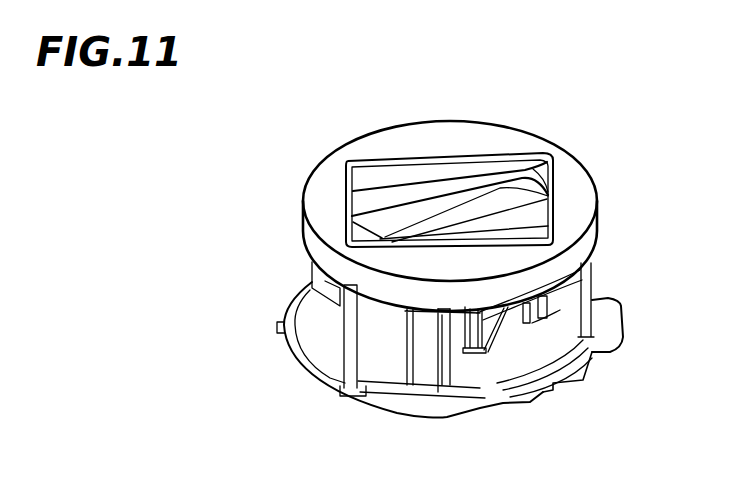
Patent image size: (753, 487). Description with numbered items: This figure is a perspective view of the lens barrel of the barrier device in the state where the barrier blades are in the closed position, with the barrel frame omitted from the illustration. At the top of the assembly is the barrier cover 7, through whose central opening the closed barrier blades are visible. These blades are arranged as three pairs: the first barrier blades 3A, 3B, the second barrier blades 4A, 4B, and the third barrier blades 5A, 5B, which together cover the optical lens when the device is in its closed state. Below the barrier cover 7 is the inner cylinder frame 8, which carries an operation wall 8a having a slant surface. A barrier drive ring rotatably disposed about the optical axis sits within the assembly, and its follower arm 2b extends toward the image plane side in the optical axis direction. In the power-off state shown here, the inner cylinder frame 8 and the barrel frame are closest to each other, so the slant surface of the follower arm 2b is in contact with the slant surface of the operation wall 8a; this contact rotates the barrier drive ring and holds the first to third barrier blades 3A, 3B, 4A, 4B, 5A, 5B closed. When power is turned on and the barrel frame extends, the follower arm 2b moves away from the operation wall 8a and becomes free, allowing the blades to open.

The barrier cover 7 is at (572, 184).
The third barrier blade 5B is at (362, 176).
The first barrier blade 3B is at (363, 201).
The second barrier blade 4B is at (373, 221).
The second barrier blade 4A is at (522, 197).
The first barrier blade 3A is at (540, 218).
The third barrier blade 5A is at (540, 238).
The inner cylinder frame 8 is at (335, 323).
The operation wall 8a is at (478, 320).
The follower arm 2b is at (447, 314).